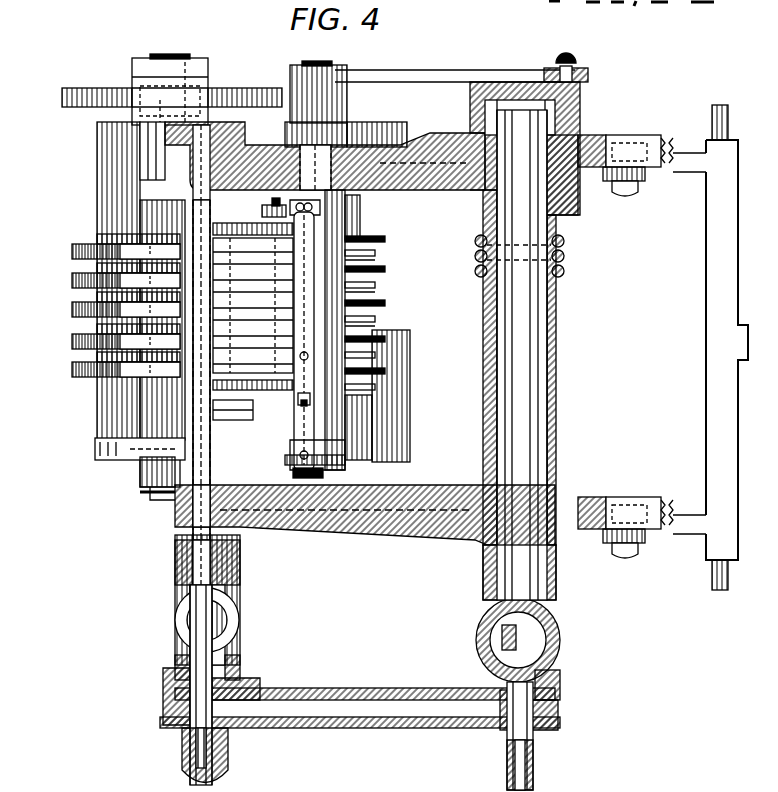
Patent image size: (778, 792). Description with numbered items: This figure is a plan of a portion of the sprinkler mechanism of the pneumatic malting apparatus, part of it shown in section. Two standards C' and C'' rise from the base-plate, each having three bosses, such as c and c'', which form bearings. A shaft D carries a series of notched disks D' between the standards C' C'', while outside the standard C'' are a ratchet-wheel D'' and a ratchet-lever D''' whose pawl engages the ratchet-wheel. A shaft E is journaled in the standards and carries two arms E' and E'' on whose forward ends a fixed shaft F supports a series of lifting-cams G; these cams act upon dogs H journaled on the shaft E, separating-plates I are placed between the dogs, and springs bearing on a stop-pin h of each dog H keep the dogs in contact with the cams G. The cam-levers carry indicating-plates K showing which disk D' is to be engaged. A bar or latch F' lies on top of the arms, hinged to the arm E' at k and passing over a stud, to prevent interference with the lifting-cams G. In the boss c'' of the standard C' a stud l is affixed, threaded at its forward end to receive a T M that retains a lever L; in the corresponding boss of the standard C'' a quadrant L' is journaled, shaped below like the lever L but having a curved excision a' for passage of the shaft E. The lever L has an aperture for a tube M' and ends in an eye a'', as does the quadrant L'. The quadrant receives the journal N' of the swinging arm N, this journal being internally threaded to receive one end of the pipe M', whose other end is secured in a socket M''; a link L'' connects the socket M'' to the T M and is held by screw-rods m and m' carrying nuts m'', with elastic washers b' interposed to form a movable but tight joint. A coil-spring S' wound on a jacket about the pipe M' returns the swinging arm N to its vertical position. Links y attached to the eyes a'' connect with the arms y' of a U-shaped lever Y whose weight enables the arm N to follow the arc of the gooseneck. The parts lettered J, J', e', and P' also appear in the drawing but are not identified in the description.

The top bar J is at (455, 64).
The screw on bar J' is at (575, 67).
The shaft E is at (346, 94).
The ratchet-lever D''' is at (148, 88).
The shaft D is at (158, 292).
The ratchet-wheel D'' is at (150, 98).
The standard C'' is at (121, 291).
The disks D' is at (115, 305).
The quadrant L' is at (325, 161).
The swinging arm N is at (544, 148).
The journal N' is at (575, 187).
The tube M' is at (508, 355).
The shoulder e' is at (464, 202).
The coil-spring S' is at (539, 256).
The eye a'' is at (625, 323).
The links y is at (632, 364).
The arms y' is at (686, 333).
The U-shaped lever Y is at (712, 347).
The arm E'' is at (382, 330).
The curved excision a' is at (333, 202).
The lever bar P' is at (302, 341).
The stop-pin h is at (274, 201).
The hinge k is at (304, 394).
The dogs H is at (253, 306).
The lifting-cams G is at (360, 372).
The separating-plates I is at (378, 318).
The indicating-plates K is at (385, 332).
The arm E' is at (390, 427).
The fixed shaft F is at (279, 435).
The bar or latch F' is at (317, 475).
The standard C' is at (237, 474).
The boss c is at (143, 503).
The boss c'' is at (152, 512).
The stud l is at (201, 432).
The lever L is at (365, 519).
The T M is at (184, 600).
The elastic washers b' is at (381, 676).
The link L'' is at (360, 720).
The screw-rod m is at (186, 685).
The screw-rod m' is at (389, 736).
The socket M'' is at (500, 613).
The nuts m'' is at (537, 737).